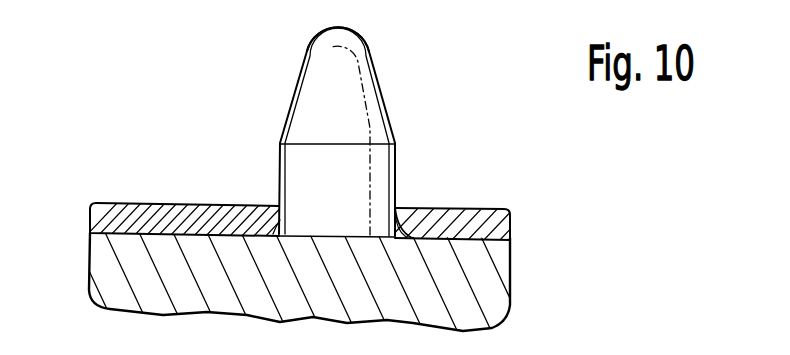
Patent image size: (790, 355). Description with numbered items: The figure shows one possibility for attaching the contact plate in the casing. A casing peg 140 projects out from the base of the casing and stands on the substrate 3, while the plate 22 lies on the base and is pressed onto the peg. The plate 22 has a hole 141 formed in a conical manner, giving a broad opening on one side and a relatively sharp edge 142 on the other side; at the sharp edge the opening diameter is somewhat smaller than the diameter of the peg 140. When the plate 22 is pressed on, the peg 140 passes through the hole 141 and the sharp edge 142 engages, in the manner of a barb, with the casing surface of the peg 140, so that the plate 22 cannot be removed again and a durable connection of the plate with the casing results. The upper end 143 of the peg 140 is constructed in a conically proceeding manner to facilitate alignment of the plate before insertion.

The substrate 3 is at (118, 268).
The plate 22 is at (125, 210).
The casing peg 140 is at (302, 173).
The hole 141 is at (389, 239).
The sharp edge 142 is at (397, 209).
The upper end 143 is at (328, 62).